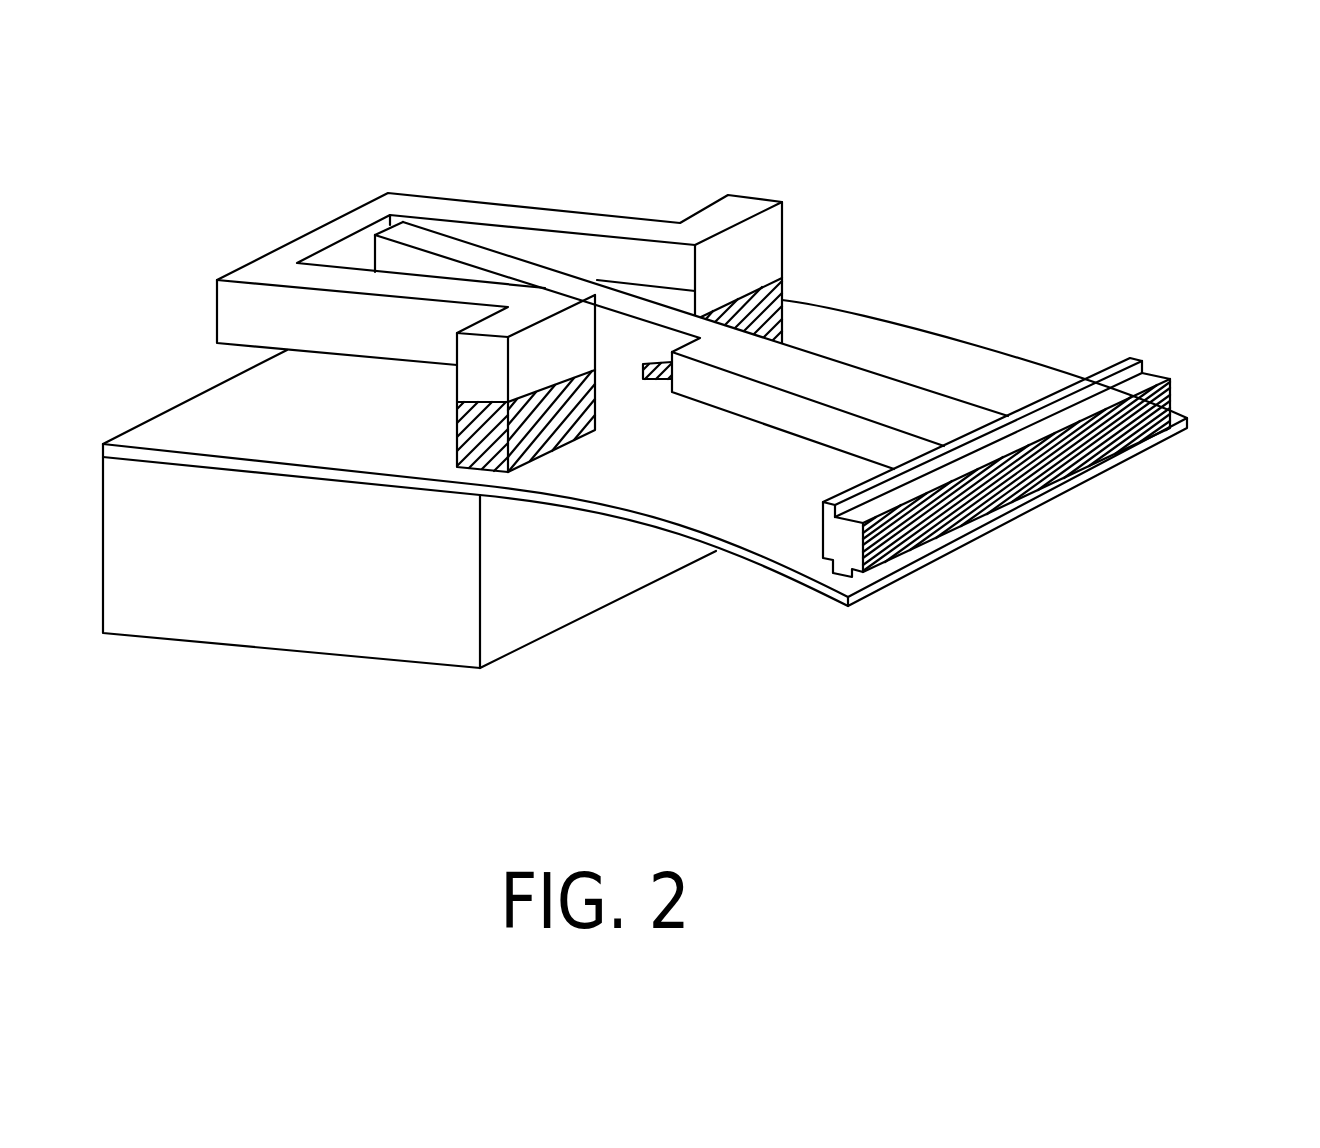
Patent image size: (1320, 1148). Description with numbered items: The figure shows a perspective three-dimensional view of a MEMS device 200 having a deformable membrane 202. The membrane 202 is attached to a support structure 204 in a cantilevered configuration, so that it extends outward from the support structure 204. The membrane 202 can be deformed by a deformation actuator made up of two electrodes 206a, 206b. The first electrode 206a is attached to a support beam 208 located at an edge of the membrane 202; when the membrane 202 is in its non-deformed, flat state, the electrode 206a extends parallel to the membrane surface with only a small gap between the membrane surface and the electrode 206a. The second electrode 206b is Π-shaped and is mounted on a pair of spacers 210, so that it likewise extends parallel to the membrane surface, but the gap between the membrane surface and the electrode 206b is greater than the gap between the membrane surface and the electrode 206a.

The MEMS device 200 is at (1135, 672).
The deformable membrane 202 is at (1017, 360).
The support structure 204 is at (325, 617).
The electrode 206a is at (877, 388).
The electrode 206b is at (397, 193).
The support beam 208 is at (1168, 392).
The spacers 210 is at (462, 443).